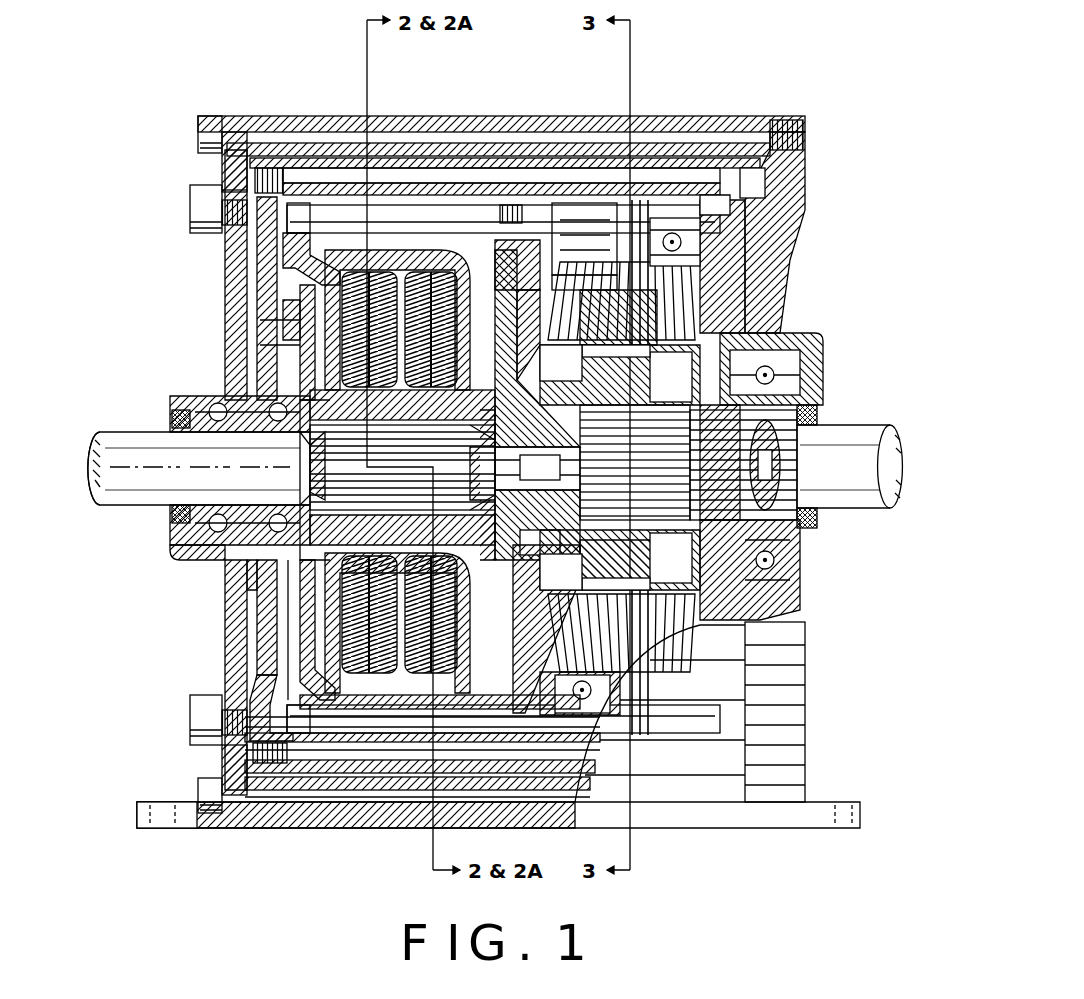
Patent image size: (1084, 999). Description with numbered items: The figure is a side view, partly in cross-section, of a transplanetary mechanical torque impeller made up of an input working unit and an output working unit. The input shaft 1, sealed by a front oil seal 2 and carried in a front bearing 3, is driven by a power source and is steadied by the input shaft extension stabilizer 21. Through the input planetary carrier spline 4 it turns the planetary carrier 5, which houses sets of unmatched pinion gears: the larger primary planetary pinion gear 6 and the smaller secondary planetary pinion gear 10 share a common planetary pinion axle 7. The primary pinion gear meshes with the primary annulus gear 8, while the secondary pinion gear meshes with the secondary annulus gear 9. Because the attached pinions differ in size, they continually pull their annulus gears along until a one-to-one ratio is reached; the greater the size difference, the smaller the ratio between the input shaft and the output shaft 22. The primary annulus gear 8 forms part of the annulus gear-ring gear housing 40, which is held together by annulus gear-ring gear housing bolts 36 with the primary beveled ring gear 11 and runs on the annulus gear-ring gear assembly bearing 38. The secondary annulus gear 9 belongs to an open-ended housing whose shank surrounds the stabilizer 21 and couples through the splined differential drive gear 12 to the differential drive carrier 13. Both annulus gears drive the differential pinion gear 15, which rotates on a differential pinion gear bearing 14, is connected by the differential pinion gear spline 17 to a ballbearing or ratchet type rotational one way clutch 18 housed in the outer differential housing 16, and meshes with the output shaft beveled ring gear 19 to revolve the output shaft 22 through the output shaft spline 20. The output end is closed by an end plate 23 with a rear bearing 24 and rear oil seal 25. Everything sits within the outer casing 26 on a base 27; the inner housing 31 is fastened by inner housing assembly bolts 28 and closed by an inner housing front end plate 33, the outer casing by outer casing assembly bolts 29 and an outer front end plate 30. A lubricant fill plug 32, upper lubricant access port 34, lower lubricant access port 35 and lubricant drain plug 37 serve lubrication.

The input shaft 1 is at (105, 464).
The front oil seal 2 is at (172, 512).
The front bearing 3 is at (190, 530).
The input planetary carrier spline 4 is at (315, 442).
The planetary carrier 5 is at (525, 405).
The primary planetary pinion gear 6 is at (268, 290).
The planetary pinion axle 7 is at (300, 312).
The primary annulus gear 8 is at (399, 452).
The secondary annulus gear 9 is at (478, 262).
The secondary planetary pinion gear 10 is at (445, 551).
The primary beveled ring gear 11 is at (521, 286).
The splined differential drive gear 12 is at (576, 435).
The differential drive carrier 13 is at (620, 467).
The differential pinion gear bearing 14 is at (612, 367).
The differential pinion gear 15 is at (745, 280).
The outer differential housing 16 is at (600, 467).
The differential pinion gear spline 17 is at (610, 702).
The ballbearing or ratchet type rotational one way clutch 18 is at (700, 232).
The output shaft beveled ring gear 19 is at (638, 467).
The output shaft spline 20 is at (785, 443).
The input shaft extension stabilizer 21 is at (785, 463).
The output shaft 22 is at (893, 490).
The end plate 23 is at (808, 708).
The rear bearing 24 is at (800, 360).
The rear oil seal 25 is at (818, 520).
The outer casing 26 is at (548, 112).
The base 27 is at (498, 816).
The inner housing assembly bolt 28 is at (453, 180).
The outer casing assembly bolt 29 is at (330, 150).
The outer front end plate 30 is at (235, 172).
The inner housing 31 is at (305, 165).
The lubricant fill plug 32 is at (190, 210).
The inner housing front end plate 33 is at (265, 255).
The upper lubricant access port 34 is at (278, 340).
The lower lubricant access port 35 is at (295, 610).
The annulus gear-ring gear housing bolt 36 is at (250, 680).
The lubricant drain plug 37 is at (190, 725).
The annulus gear-ring gear assembly bearing 38 is at (230, 568).
The annulus gear-ring gear housing 40 is at (397, 623).